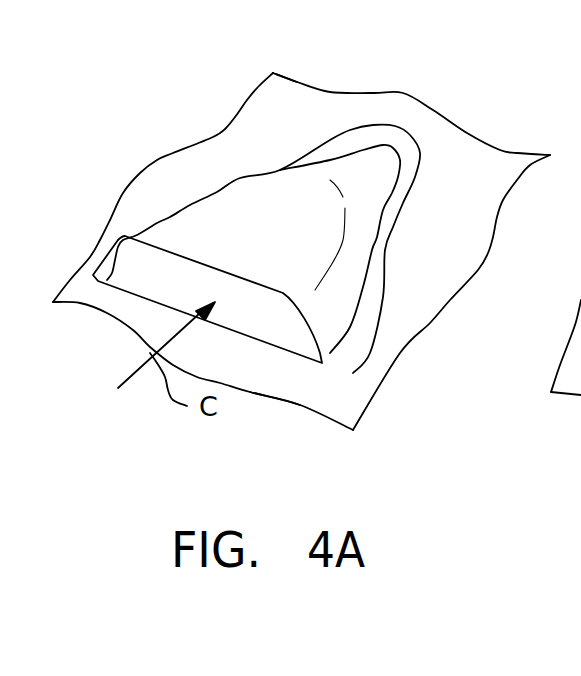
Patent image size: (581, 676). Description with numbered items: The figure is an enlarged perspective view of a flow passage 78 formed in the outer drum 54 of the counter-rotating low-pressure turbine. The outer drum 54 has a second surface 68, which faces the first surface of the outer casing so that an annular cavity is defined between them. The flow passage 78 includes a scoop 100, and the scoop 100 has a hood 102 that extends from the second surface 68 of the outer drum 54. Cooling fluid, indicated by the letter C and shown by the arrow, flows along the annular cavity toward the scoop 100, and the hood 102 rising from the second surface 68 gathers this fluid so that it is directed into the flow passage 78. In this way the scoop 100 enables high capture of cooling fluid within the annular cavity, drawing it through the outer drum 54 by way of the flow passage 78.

The outer drum 54 is at (453, 157).
The second surface 68 is at (323, 392).
The flow passage 78 is at (213, 102).
The scoop 100 is at (343, 280).
The hood 102 is at (190, 262).